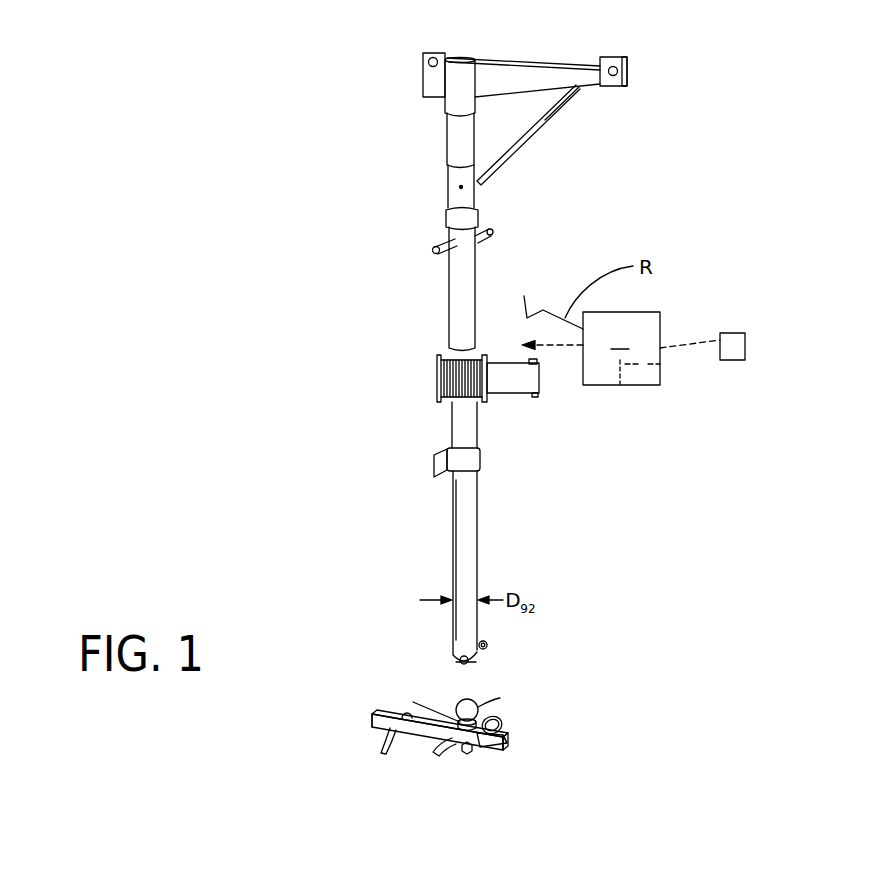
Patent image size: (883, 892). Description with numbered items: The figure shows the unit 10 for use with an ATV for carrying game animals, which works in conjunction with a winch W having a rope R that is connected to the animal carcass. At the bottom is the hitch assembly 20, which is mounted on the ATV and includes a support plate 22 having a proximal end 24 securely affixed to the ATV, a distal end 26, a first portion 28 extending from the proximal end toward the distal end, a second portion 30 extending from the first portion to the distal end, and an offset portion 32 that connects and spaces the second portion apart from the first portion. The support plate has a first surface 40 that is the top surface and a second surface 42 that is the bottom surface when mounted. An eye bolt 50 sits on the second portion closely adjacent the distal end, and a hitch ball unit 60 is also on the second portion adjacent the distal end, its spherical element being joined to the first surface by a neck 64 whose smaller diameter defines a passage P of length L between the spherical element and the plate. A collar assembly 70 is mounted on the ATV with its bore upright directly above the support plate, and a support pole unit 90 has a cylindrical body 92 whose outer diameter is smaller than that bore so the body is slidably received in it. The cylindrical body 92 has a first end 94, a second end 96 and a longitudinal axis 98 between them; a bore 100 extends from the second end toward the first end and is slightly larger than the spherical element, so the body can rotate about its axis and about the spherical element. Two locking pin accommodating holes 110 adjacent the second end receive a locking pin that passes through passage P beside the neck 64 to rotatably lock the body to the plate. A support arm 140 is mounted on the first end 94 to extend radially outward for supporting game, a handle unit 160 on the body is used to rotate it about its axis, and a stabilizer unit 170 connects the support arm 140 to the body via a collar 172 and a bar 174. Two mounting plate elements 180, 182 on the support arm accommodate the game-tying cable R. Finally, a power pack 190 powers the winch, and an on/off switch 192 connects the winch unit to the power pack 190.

The unit 10 is at (352, 209).
The hitch assembly 20 is at (558, 750).
The support plate 22 is at (413, 760).
The proximal end 24 is at (373, 725).
The distal end 26 is at (505, 748).
The first portion 28 is at (398, 757).
The second portion 30 is at (495, 752).
The offset portion 32 is at (455, 760).
The first surface 40 is at (378, 712).
The second surface 42 is at (500, 752).
The eye bolt 50 is at (500, 724).
The hitch ball unit 60 is at (441, 699).
The neck 64 is at (465, 755).
The collar assembly 70 is at (435, 336).
The support pole unit 90 is at (355, 480).
The cylindrical body 92 is at (436, 434).
The first end 94 is at (463, 56).
The second end 96 is at (480, 665).
The longitudinal axis 98 is at (468, 518).
The bore 100 is at (465, 666).
The locking pin accommodating holes 110 is at (460, 643).
The support arm 140 is at (603, 60).
The handle unit 160 is at (518, 230).
The stabilizer unit 170 is at (530, 168).
The collar 172 is at (446, 351).
The bar 174 is at (552, 118).
The mounting plate element 180 is at (461, 48).
The mounting plate element 182 is at (657, 65).
The power pack 190 is at (645, 375).
The on/off switch 192 is at (735, 345).